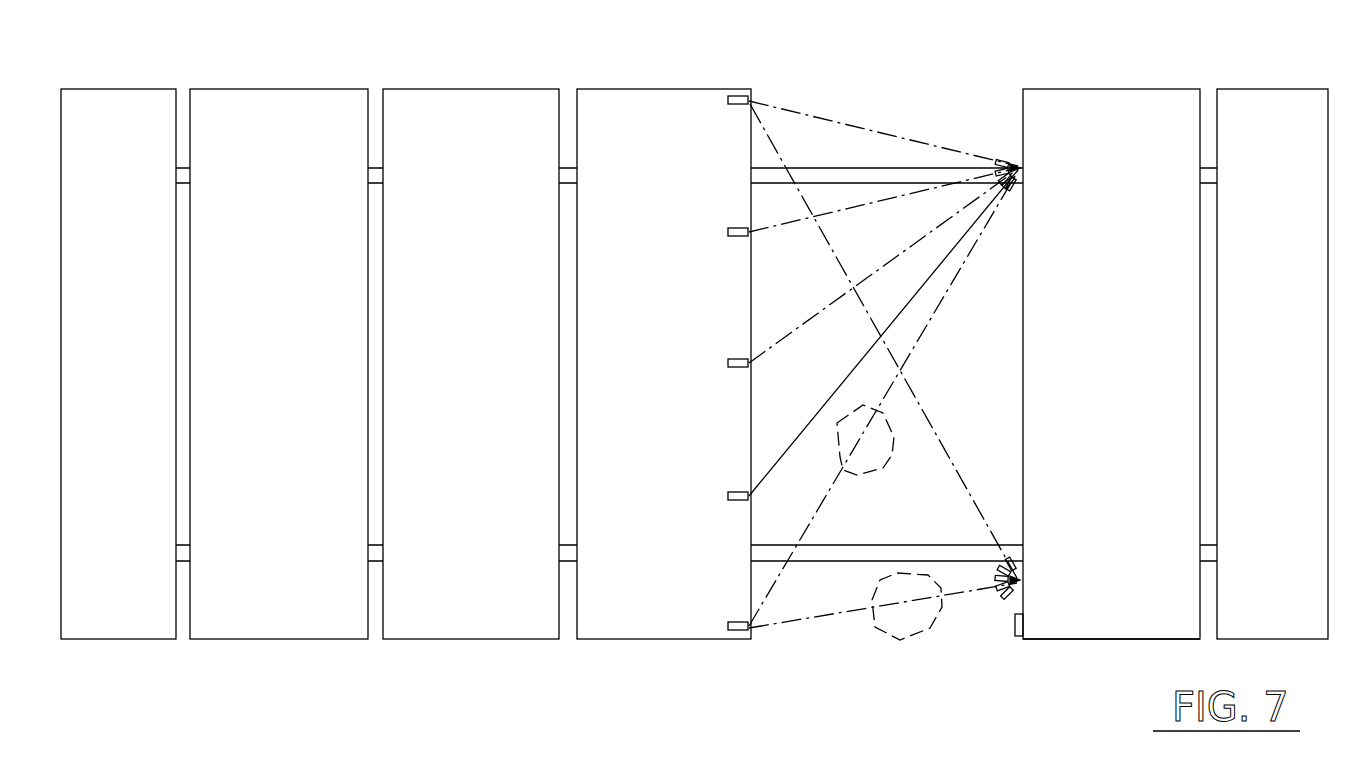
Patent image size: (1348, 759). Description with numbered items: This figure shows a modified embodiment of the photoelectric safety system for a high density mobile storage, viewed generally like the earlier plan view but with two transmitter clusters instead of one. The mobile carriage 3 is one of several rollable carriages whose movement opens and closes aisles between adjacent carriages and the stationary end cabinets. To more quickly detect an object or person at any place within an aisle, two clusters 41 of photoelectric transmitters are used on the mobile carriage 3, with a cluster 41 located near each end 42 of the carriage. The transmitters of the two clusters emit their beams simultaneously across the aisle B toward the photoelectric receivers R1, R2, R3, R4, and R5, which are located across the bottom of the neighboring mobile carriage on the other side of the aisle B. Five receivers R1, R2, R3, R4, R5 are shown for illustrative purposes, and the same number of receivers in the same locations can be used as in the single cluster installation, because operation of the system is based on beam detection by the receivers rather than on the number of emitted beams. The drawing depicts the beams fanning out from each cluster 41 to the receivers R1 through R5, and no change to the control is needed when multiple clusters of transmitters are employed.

The photoelectric receiver R1 is at (728, 626).
The photoelectric receiver R2 is at (728, 496).
The photoelectric receiver R3 is at (728, 363).
The photoelectric receiver R4 is at (728, 232).
The photoelectric receiver R5 is at (741, 95).
The cluster 41 is at (1011, 143).
The end 42 is at (1065, 113).
The mobile carriage 3 is at (1117, 641).
The aisle B is at (945, 486).